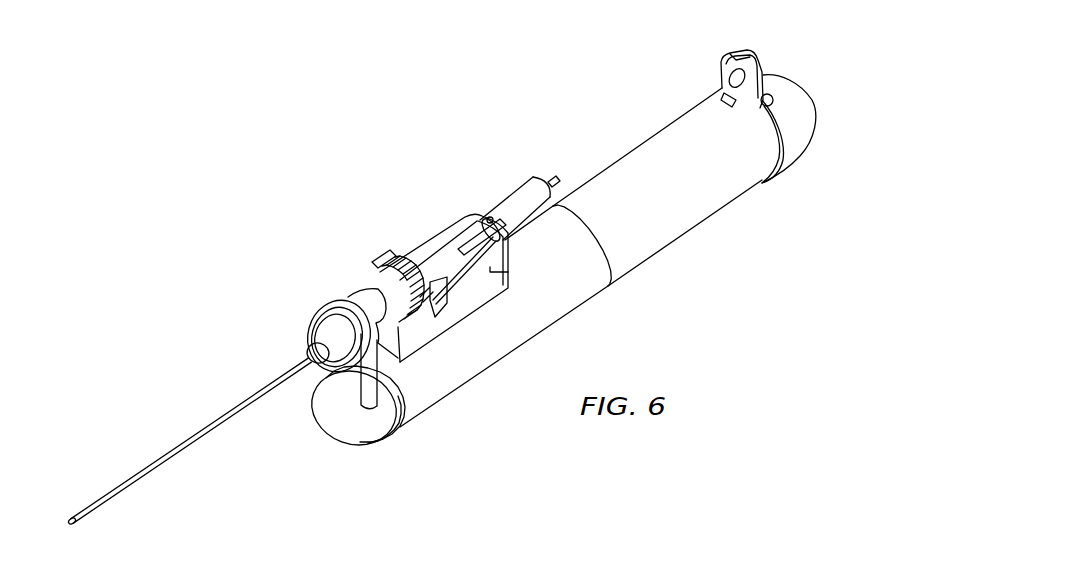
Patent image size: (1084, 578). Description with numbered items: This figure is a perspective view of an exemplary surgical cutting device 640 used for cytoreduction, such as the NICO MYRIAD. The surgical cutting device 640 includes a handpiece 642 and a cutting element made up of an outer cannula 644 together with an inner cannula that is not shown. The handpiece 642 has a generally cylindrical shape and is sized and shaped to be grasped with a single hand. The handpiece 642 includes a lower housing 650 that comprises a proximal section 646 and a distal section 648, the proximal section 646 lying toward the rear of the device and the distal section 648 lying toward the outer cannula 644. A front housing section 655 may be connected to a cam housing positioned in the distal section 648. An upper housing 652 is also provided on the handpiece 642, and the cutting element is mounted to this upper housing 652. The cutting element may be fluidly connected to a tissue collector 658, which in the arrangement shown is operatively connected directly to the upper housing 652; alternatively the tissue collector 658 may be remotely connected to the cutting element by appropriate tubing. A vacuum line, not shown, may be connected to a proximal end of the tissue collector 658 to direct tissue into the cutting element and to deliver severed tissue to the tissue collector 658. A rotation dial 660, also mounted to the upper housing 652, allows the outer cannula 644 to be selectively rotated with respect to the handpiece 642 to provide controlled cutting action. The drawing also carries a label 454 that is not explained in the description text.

The surgical cutting device 640 is at (624, 70).
The handpiece 642 is at (699, 182).
The outer cannula 644 is at (168, 452).
The proximal section 646 is at (714, 203).
The distal section 648 is at (453, 378).
The lower housing 650 is at (610, 280).
The upper housing 652 is at (438, 232).
The front housing section 655 is at (346, 432).
The tissue collector 658 is at (513, 200).
The rotation dial 660 is at (385, 267).
The clip 454 is at (468, 257).